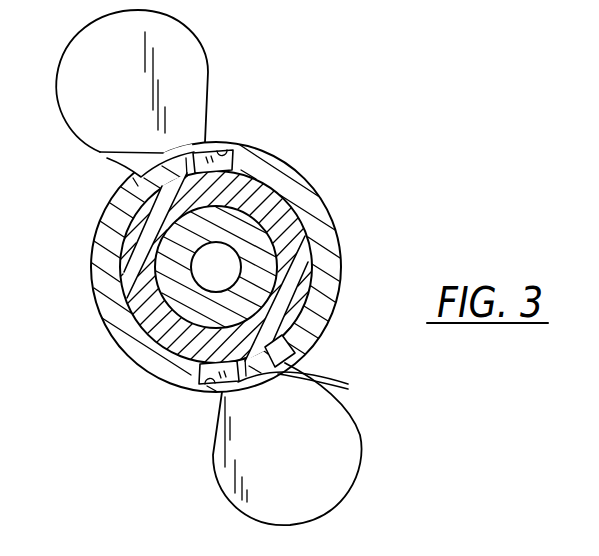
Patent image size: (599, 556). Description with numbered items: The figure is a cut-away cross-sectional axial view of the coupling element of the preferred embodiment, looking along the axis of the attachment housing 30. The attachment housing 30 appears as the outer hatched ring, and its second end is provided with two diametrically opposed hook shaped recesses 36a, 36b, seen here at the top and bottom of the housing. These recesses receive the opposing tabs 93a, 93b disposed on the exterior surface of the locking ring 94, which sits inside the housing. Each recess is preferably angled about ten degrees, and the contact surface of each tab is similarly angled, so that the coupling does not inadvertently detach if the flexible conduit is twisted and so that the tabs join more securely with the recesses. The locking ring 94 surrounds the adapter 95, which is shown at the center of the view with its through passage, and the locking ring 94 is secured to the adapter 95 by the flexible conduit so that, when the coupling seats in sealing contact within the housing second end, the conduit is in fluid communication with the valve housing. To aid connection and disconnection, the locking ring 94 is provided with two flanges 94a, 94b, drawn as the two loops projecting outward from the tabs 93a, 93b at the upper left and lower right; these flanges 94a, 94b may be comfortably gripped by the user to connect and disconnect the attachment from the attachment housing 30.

The attachment housing 30 is at (88, 221).
The hook shaped recess 36a is at (233, 148).
The hook shaped recess 36b is at (211, 386).
The tab 93a is at (100, 153).
The tab 93b is at (335, 384).
The locking ring 94 is at (310, 287).
The flange 94a is at (207, 52).
The flange 94b is at (363, 458).
The adapter 95 is at (273, 240).